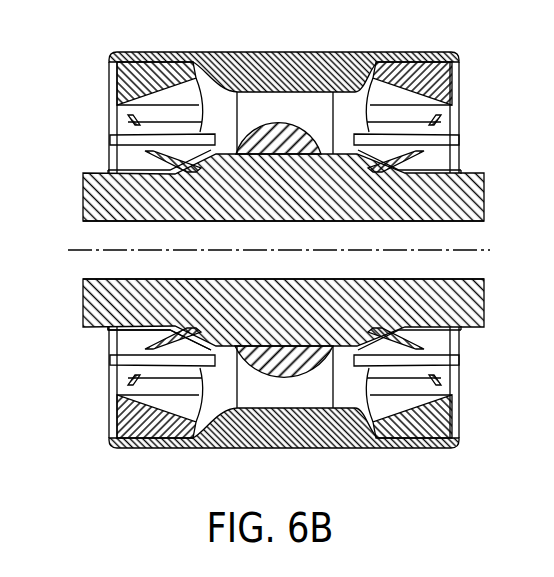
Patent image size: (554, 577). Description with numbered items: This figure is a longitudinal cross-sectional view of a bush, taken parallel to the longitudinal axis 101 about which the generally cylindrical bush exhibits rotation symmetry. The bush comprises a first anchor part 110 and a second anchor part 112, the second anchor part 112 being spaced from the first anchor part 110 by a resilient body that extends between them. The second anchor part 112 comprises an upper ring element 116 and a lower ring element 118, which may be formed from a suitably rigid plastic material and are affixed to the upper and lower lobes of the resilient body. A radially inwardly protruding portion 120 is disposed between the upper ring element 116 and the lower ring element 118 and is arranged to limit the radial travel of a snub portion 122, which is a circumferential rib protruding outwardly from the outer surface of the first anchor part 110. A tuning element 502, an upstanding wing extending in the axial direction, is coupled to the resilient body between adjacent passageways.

The longitudinal axis 101 is at (100, 248).
The first anchor part 110 is at (117, 200).
The second anchor part 112 is at (226, 48).
The upper ring element 116 is at (137, 72).
The lower ring element 118 is at (411, 70).
The radially inwardly protruding portion 120 is at (286, 97).
The snub portion 122 is at (300, 137).
The tuning element 502 is at (112, 362).